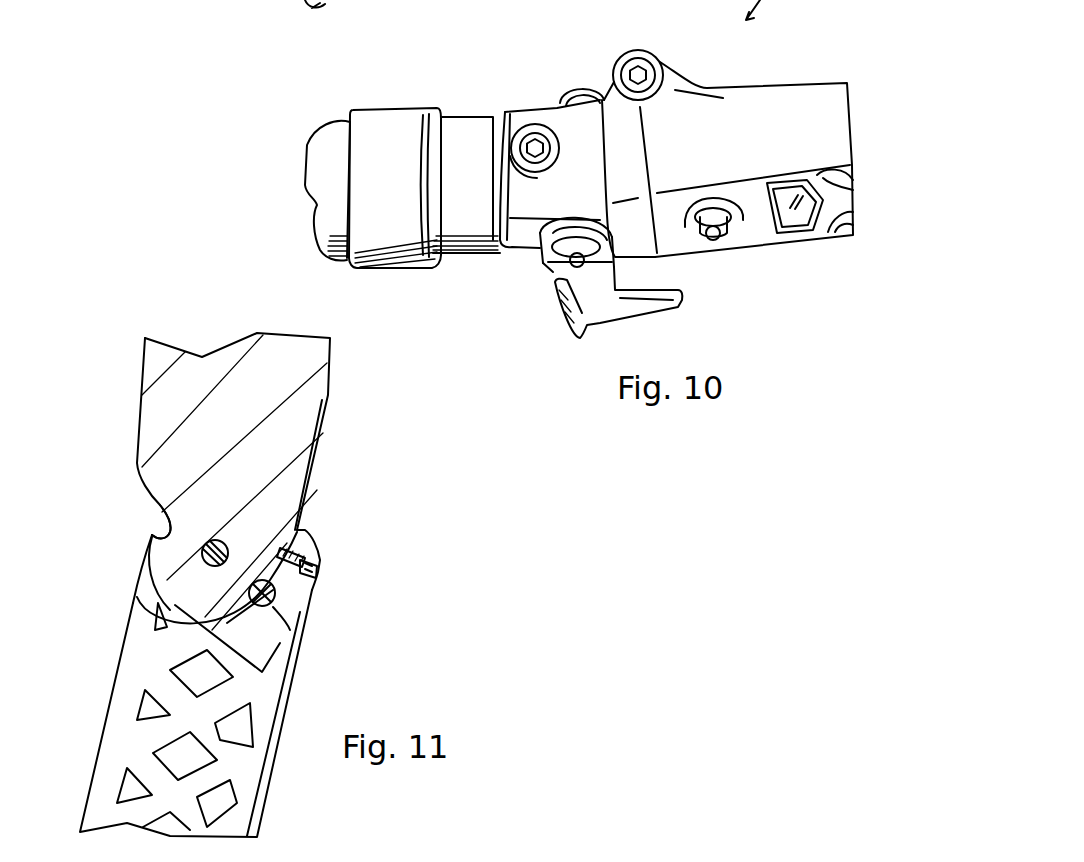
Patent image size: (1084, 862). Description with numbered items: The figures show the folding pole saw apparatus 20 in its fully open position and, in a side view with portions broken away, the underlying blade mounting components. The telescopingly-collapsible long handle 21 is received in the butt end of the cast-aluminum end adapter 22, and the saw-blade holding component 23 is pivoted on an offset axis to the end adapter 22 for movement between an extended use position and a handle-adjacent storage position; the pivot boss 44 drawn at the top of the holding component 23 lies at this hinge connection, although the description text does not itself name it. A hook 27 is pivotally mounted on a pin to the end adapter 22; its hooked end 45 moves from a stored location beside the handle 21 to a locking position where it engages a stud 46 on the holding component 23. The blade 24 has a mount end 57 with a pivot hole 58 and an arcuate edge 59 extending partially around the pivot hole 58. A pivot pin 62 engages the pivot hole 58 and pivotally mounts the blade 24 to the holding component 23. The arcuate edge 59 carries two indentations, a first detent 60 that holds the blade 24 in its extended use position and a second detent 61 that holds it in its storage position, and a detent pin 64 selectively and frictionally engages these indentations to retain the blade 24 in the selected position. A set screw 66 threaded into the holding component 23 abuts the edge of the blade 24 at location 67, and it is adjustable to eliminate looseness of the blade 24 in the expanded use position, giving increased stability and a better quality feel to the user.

In FIG. 11, the pole saw apparatus 20 is at (55, 438).
In FIG. 10, the handle 21 is at (410, 108).
In FIG. 10, the end adapter 22 is at (523, 243).
In FIG. 10, the saw-blade holding component 23 is at (768, 97).
In FIG. 11, the saw-blade holding component 23 is at (117, 725).
In FIG. 11, the blade 24 is at (307, 410).
In FIG. 10, the hook 27 is at (608, 298).
In FIG. 10, the pivot boss 44 is at (641, 53).
In FIG. 10, the hooked end 45 is at (670, 310).
In FIG. 10, the stud 46 is at (722, 232).
In FIG. 11, the mount end 57 is at (170, 563).
In FIG. 11, the pivot hole 58 is at (205, 548).
In FIG. 11, the arcuate edge 59 is at (292, 637).
In FIG. 11, the first detent 60 is at (276, 593).
In FIG. 11, the second detent 61 is at (152, 528).
In FIG. 11, the pivot pin 62 is at (228, 550).
In FIG. 11, the detent pin 64 is at (277, 610).
In FIG. 11, the set screw 66 is at (320, 572).
In FIG. 11, the location 67 is at (298, 532).